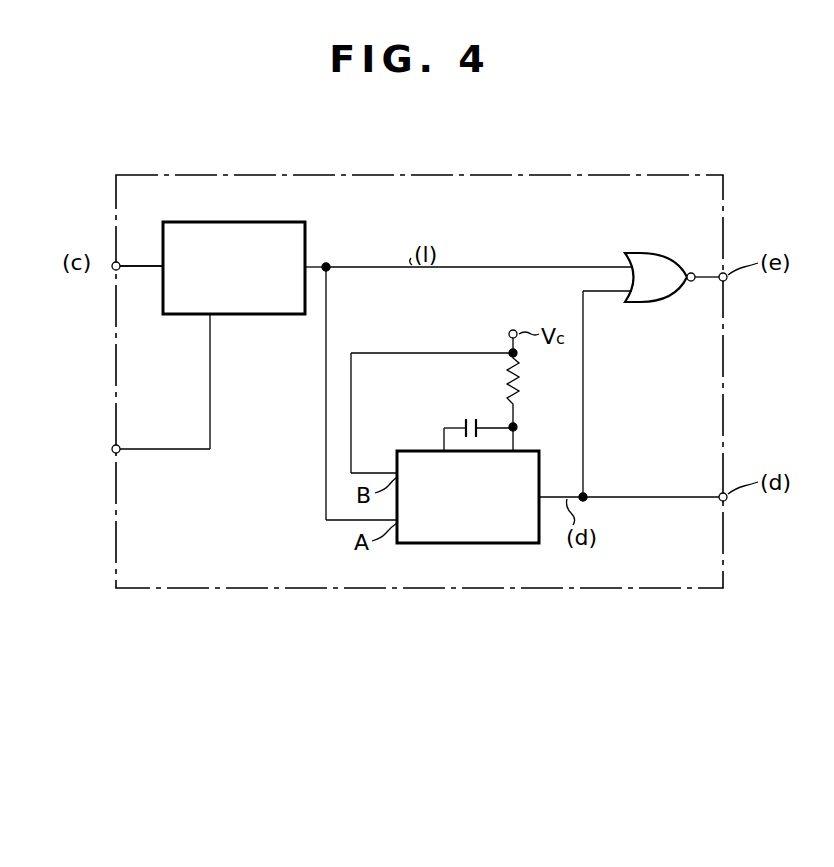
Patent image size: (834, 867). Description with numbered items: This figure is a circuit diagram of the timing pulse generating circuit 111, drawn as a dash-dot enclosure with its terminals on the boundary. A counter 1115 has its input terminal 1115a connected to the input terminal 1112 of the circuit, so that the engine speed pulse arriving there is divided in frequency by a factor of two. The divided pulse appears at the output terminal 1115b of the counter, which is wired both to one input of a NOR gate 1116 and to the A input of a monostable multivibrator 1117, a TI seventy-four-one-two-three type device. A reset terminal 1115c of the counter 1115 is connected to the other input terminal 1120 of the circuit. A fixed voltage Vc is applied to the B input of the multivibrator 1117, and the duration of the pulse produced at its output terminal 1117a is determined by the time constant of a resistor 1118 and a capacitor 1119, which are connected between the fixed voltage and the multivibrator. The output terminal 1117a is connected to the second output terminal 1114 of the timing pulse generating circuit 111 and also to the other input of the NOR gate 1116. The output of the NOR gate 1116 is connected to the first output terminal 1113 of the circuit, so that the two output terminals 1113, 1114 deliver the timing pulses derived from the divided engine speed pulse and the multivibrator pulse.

The timing pulse generating circuit 111 is at (641, 590).
The input terminal 1112 is at (114, 270).
The first output terminal 1113 is at (728, 280).
The second output terminal 1114 is at (726, 502).
The counter 1115 is at (307, 225).
The input terminal 1115a is at (164, 269).
The output terminal 1115b is at (306, 261).
The reset terminal 1115c is at (210, 320).
The NOR gate 1116 is at (659, 254).
The monostable multivibrator 1117 is at (485, 544).
The output terminal 1117a is at (543, 493).
The resistor 1118 is at (516, 385).
The capacitor 1119 is at (472, 420).
The other input terminal 1120 is at (115, 452).